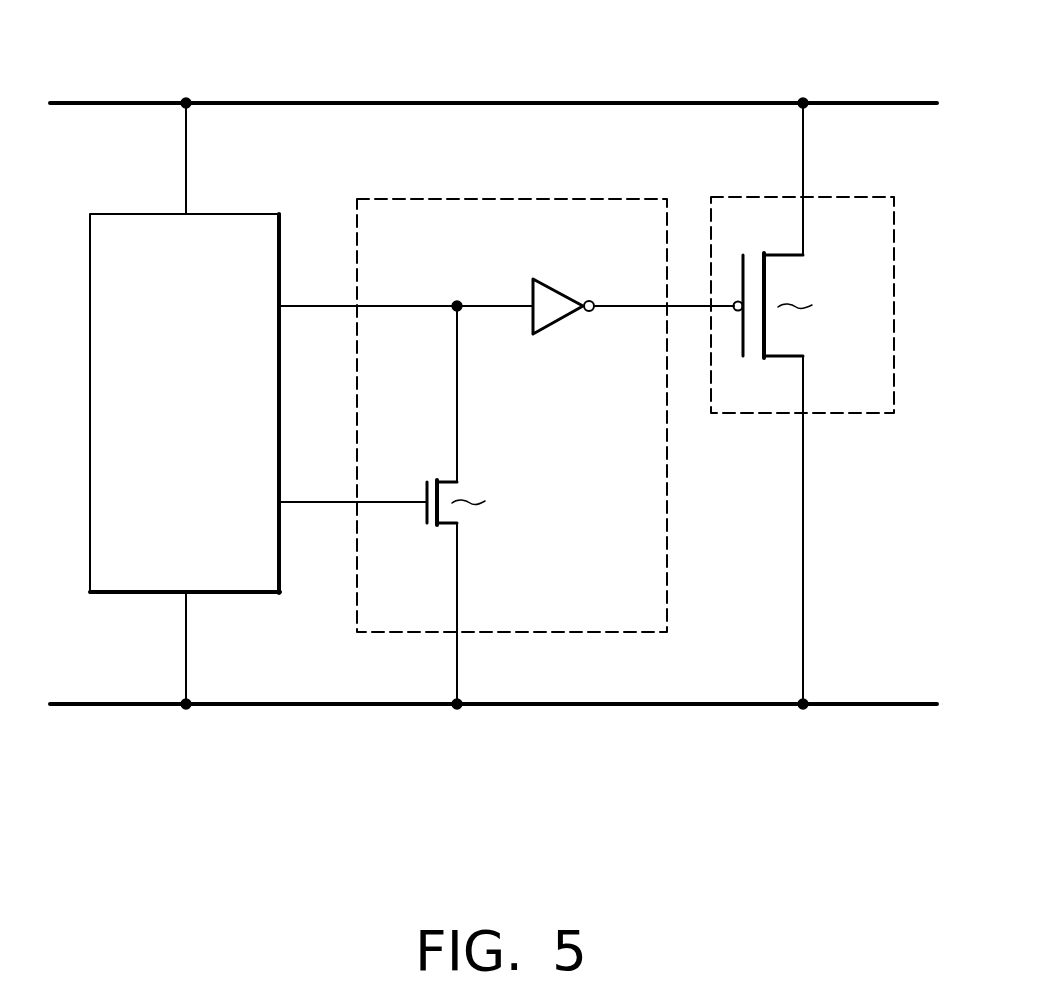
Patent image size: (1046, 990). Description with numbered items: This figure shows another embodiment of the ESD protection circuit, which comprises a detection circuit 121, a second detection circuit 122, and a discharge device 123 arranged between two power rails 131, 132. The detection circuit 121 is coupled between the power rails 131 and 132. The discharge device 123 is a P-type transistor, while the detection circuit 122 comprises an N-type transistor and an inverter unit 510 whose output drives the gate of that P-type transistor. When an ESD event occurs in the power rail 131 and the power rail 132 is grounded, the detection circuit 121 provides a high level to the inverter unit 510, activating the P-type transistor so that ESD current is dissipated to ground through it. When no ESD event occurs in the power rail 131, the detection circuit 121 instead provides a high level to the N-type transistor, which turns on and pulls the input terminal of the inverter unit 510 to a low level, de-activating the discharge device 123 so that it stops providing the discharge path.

The power rail 131 is at (865, 100).
The power rail 132 is at (872, 708).
The detection circuit 121 is at (235, 598).
The detection circuit 122 is at (567, 415).
The discharge device 123 is at (865, 417).
The inverter unit 510 is at (560, 290).